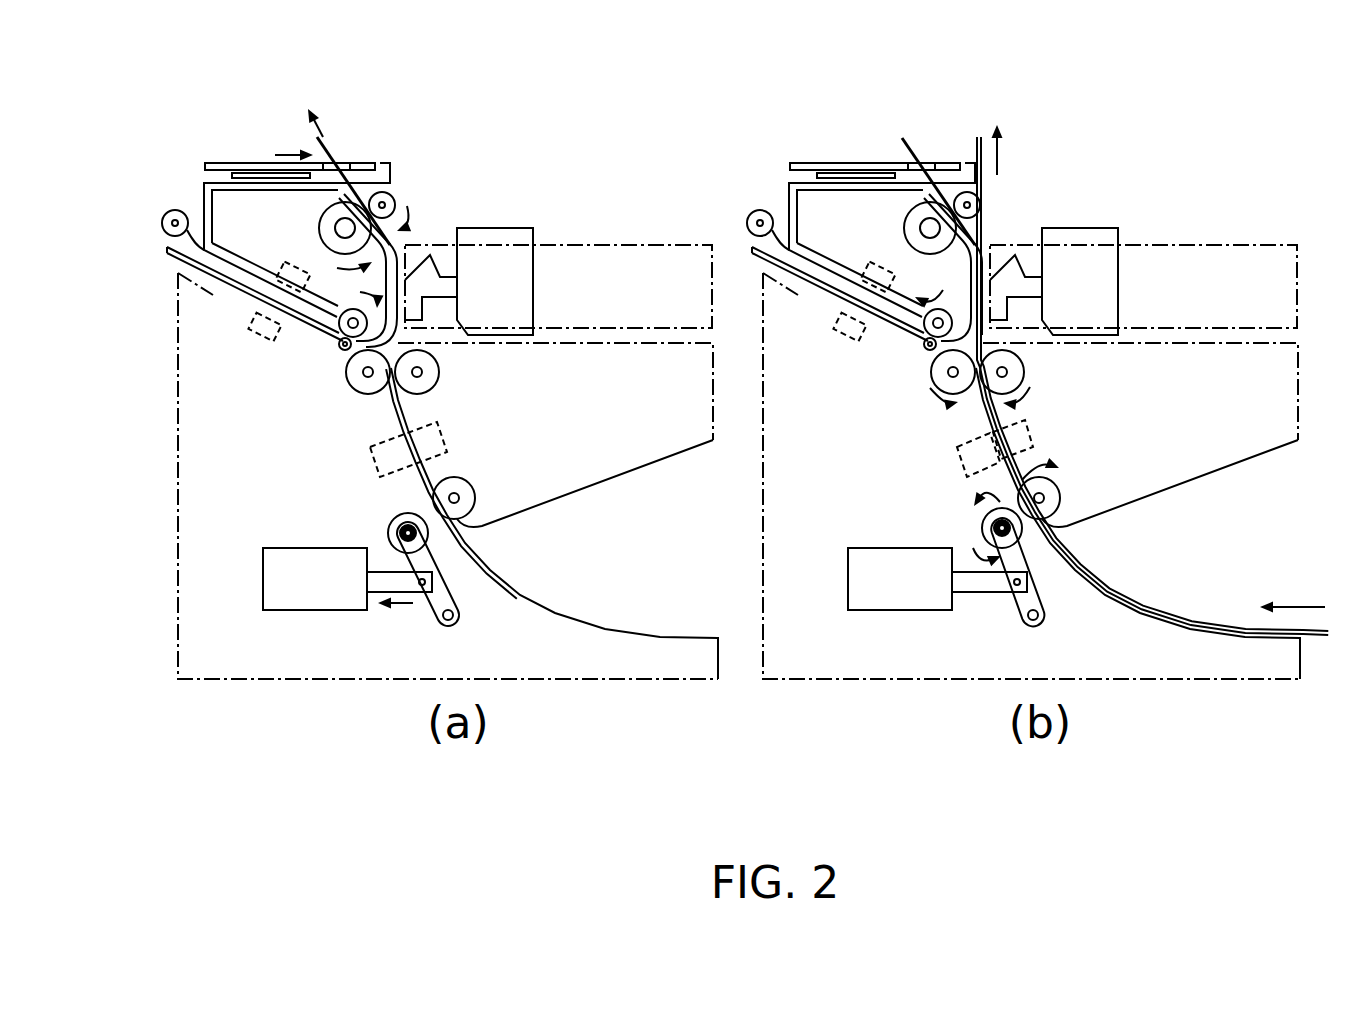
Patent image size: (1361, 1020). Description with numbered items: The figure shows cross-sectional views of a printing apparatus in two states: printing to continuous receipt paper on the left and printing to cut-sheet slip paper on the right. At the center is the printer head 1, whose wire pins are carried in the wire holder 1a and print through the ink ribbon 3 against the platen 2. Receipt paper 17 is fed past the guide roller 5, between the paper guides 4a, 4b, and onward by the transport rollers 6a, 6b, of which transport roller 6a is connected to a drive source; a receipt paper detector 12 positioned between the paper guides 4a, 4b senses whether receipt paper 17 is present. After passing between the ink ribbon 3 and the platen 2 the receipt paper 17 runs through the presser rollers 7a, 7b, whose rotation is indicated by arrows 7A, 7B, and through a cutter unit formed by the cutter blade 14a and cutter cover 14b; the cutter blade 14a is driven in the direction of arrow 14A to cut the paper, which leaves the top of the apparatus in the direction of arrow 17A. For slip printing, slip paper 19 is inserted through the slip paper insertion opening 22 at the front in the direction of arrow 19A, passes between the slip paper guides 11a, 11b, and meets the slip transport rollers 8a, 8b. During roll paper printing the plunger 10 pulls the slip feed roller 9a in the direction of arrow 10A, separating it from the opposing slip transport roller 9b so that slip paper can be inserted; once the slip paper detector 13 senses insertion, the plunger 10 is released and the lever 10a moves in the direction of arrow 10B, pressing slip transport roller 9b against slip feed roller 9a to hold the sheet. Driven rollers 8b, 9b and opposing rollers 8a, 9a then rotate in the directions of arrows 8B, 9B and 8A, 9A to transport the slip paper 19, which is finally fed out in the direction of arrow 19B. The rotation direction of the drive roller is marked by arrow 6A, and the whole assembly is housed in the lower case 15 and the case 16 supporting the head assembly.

The printer head 1 is at (504, 233).
The wire holder 1a is at (427, 273).
The platen 2 is at (400, 240).
The ink ribbon 3 is at (617, 272).
The paper guide 4a is at (213, 214).
The paper guide 4b is at (208, 280).
The guide roller 5 is at (178, 213).
The feed roller 6A is at (632, 280).
The transport roller 6a is at (283, 340).
The transport roller 6b is at (345, 355).
The presser roller 7a is at (387, 196).
The presser roller 7b is at (337, 213).
The rotation direction 7A is at (421, 211).
The rotation direction 7B is at (329, 257).
The slip transport roller 8a is at (348, 357).
The slip transport roller 8b is at (433, 374).
The arrow 8A is at (1035, 404).
The arrow 8B is at (923, 405).
The slip feed roller 9a is at (410, 514).
The slip transport roller 9b is at (475, 495).
The arrow 9A is at (1065, 477).
The arrow 9B is at (965, 493).
The plunger 10 is at (277, 585).
The lever 10a is at (997, 593).
The arrow 10A is at (400, 625).
The arrow 10B is at (936, 537).
The slip paper guide 11a is at (1071, 434).
The slip paper guide 11b is at (934, 451).
The receipt paper detector 12 is at (230, 348).
The slip paper detector 13 is at (445, 433).
The cutter blade 14a is at (233, 163).
The cutter cover 14b is at (248, 163).
The arrow 14A is at (281, 141).
The lower case 15 is at (272, 652).
The case 16 is at (647, 442).
The receipt paper 17 is at (331, 148).
The discharge direction 17A is at (330, 106).
The slip paper 19 is at (1152, 437).
The arrow 19A is at (1293, 588).
The arrow 19B is at (1029, 145).
The slip paper insertion opening 22 is at (1258, 516).